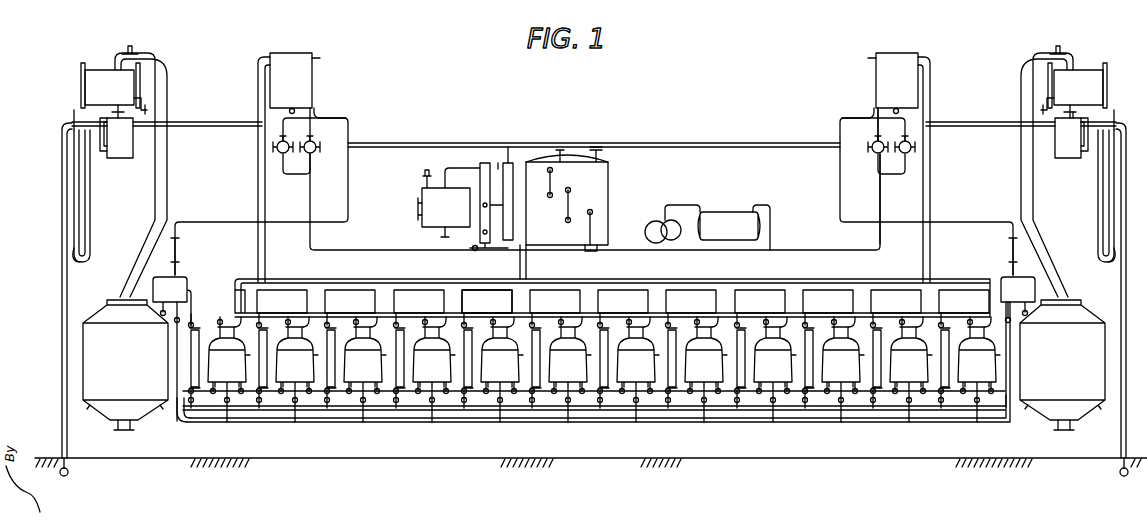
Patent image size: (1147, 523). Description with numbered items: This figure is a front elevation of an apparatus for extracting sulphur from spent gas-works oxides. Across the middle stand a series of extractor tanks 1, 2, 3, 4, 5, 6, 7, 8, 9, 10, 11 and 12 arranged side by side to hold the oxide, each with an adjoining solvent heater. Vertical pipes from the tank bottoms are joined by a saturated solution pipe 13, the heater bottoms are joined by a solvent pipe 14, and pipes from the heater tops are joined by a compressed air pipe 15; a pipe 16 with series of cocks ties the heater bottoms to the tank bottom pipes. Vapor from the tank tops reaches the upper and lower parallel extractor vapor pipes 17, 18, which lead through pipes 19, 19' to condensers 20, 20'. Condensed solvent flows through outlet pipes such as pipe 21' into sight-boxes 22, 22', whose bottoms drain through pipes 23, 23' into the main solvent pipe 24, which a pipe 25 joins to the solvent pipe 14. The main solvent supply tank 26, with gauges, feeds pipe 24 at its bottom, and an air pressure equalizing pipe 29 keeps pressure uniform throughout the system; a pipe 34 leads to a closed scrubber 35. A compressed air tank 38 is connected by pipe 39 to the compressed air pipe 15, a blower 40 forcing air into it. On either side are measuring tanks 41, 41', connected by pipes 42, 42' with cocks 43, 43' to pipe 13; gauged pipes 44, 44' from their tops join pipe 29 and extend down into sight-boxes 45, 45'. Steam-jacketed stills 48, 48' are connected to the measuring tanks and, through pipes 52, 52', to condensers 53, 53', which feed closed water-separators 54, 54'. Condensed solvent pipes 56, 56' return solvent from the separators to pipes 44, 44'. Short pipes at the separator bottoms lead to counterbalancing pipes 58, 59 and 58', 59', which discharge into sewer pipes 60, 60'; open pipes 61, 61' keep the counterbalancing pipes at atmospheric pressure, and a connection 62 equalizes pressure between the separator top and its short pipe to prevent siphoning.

The extractor tank 1 is at (220, 368).
The extractor tank 2 is at (288, 368).
The extractor tank 3 is at (356, 368).
The extractor tank 4 is at (425, 368).
The extractor tank 5 is at (493, 368).
The extractor tank 6 is at (561, 368).
The extractor tank 7 is at (629, 368).
The extractor tank 8 is at (697, 368).
The extractor tank 9 is at (766, 368).
The extractor tank 10 is at (834, 368).
The extractor tank 11 is at (902, 368).
The extractor tank 12 is at (970, 368).
The saturated solution pipe 13 is at (380, 424).
The solvent pipe 14 is at (455, 423).
The compressed air pipe 15 is at (313, 279).
The pipe 16 is at (702, 423).
The upper extractor vapor pipe 17 is at (406, 296).
The lower extractor vapor pipe 18 is at (476, 296).
The pipe 19 is at (244, 169).
The pipe 19' is at (942, 169).
The condenser 20 is at (308, 96).
The condenser 20' is at (874, 96).
The outlet pipe 21' is at (861, 124).
The sight-box 22 is at (316, 163).
The sight-box 22' is at (873, 160).
The pipe 23 is at (450, 202).
The pipe 23' is at (899, 199).
The main solvent pipe 24 is at (790, 253).
The pipe 25 is at (527, 268).
The main solvent supply tank 26 is at (590, 184).
The air pressure equalizing pipe 29 is at (676, 146).
The pipe 34 is at (453, 170).
The closed scrubber 35 is at (444, 203).
The compressed air tank 38 is at (729, 226).
The pipe 39 is at (771, 223).
The blower 40 is at (647, 228).
The measuring tank 41 is at (172, 282).
The measuring tank 41' is at (1018, 277).
The pipe 42 is at (165, 418).
The pipe 42' is at (1025, 416).
The cock 43 is at (177, 361).
The cock 43' is at (984, 291).
The pipe 44 is at (261, 196).
The pipe 44' is at (899, 196).
The sight-box 45 is at (286, 169).
The sight-box 45' is at (896, 165).
The still 48 is at (125, 365).
The still 48' is at (1062, 365).
The pipe 52 is at (156, 175).
The pipe 52' is at (1047, 175).
The condenser 53 is at (114, 82).
The condenser 53' is at (1074, 82).
The water-separator 54 is at (116, 156).
The water-separator 54' is at (1069, 156).
The condensed solvent pipe 56 is at (167, 140).
The condensed solvent pipe 56' is at (1021, 140).
The counterbalancing pipe 58 is at (98, 196).
The counterbalancing pipe 58' is at (1083, 196).
The counterbalancing pipe 59 is at (87, 264).
The counterbalancing pipe 59' is at (1097, 264).
The sewer pipe 60 is at (46, 299).
The sewer pipe 60' is at (1131, 299).
The open pipe 61 is at (49, 120).
The open pipe 61' is at (1130, 123).
The connection 62 is at (1080, 127).